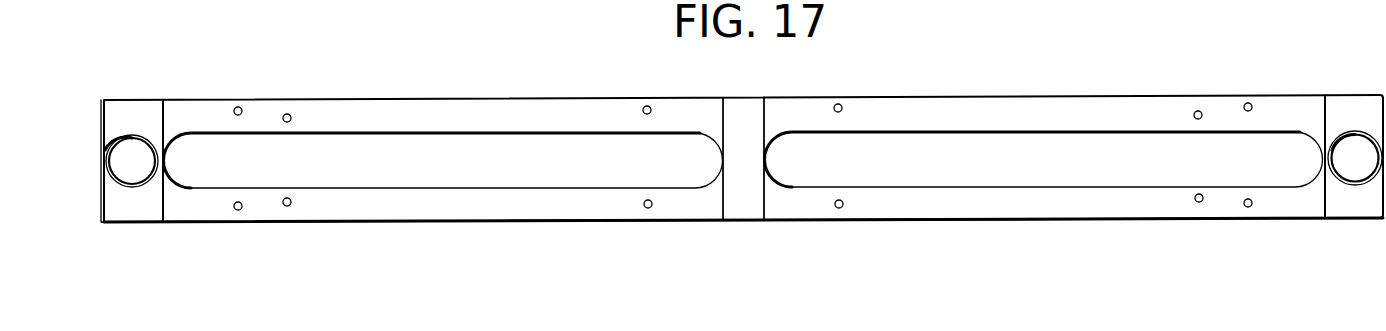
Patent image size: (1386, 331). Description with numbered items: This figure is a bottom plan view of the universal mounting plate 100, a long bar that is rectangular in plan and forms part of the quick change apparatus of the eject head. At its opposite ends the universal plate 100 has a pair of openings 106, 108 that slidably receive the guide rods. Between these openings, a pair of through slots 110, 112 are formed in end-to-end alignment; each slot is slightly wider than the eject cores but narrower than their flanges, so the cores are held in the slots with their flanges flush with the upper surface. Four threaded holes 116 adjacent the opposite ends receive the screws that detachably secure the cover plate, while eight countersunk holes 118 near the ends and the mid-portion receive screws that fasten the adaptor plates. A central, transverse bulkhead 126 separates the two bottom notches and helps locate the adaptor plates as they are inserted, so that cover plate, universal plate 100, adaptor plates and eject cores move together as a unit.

The universal mounting plate 100 is at (912, 88).
The opening 106 is at (133, 170).
The opening 108 is at (1358, 170).
The through slot 110 is at (405, 134).
The through slot 112 is at (1085, 132).
The threaded holes 116 is at (287, 114).
The countersunk holes 118 is at (238, 107).
The transverse bulkhead 126 is at (746, 207).